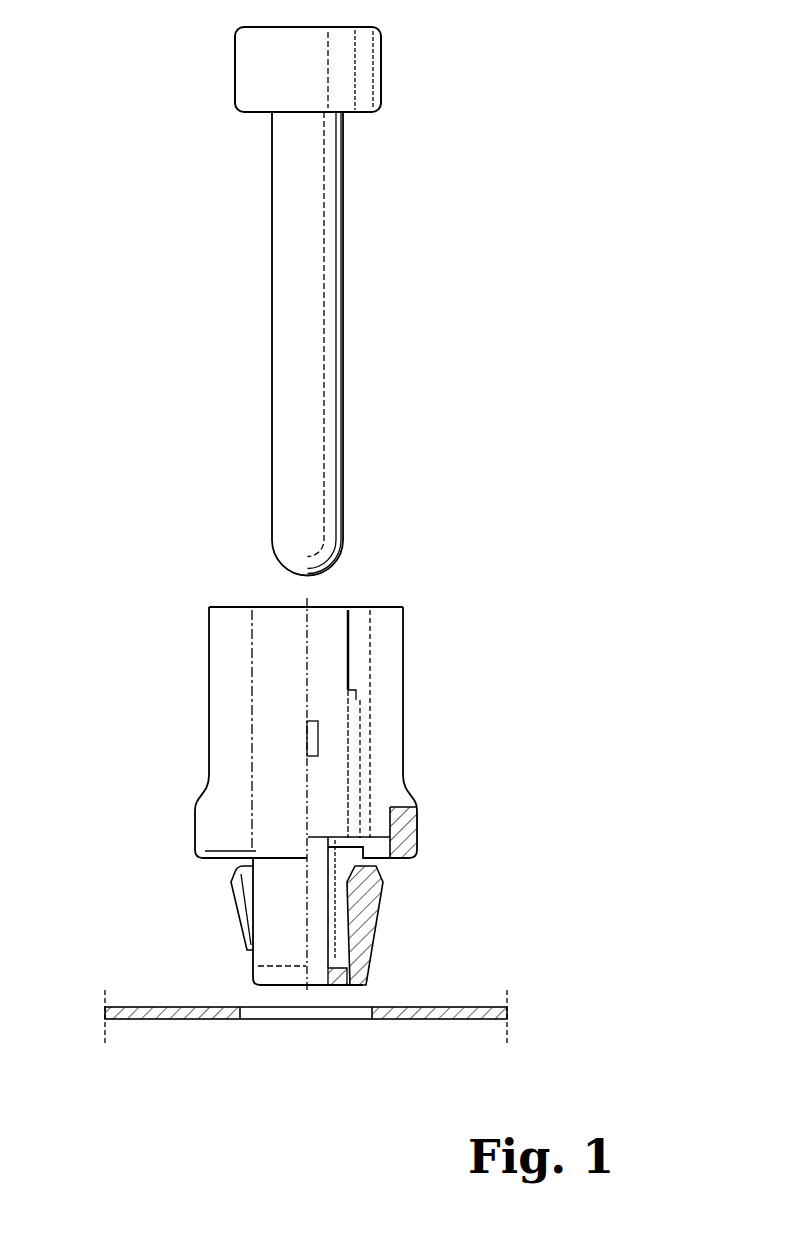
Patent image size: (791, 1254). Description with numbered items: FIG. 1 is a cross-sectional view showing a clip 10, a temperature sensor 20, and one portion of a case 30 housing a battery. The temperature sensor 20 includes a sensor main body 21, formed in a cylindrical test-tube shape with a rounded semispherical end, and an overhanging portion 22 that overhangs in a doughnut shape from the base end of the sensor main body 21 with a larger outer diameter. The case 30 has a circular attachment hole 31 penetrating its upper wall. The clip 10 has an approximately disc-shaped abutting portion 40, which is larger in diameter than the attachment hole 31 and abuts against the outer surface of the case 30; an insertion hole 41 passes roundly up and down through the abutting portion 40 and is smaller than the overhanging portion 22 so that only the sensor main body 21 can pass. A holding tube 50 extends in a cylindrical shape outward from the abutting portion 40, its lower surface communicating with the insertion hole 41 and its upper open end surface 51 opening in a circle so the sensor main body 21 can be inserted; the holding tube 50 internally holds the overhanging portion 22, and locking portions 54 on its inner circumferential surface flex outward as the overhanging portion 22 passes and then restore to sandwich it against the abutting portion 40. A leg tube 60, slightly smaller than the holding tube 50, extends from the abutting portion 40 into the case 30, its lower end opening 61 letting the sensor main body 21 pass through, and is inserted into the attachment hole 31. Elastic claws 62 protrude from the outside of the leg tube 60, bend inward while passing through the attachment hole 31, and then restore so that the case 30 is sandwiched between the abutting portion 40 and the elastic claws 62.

The clip 10 is at (130, 625).
The temperature sensor 20 is at (140, 47).
The sensor main body 21 is at (336, 320).
The overhanging portion 22 is at (372, 70).
The case 30 is at (118, 1020).
The attachment hole 31 is at (262, 1015).
The abutting portion 40 is at (417, 830).
The insertion hole 41 is at (367, 847).
The holding tube 50 is at (387, 646).
The open end surface 51 is at (360, 612).
The locking portions 54 is at (305, 740).
The leg tube 60 is at (248, 975).
The end opening 61 is at (322, 987).
The elastic claws 62 is at (232, 893).